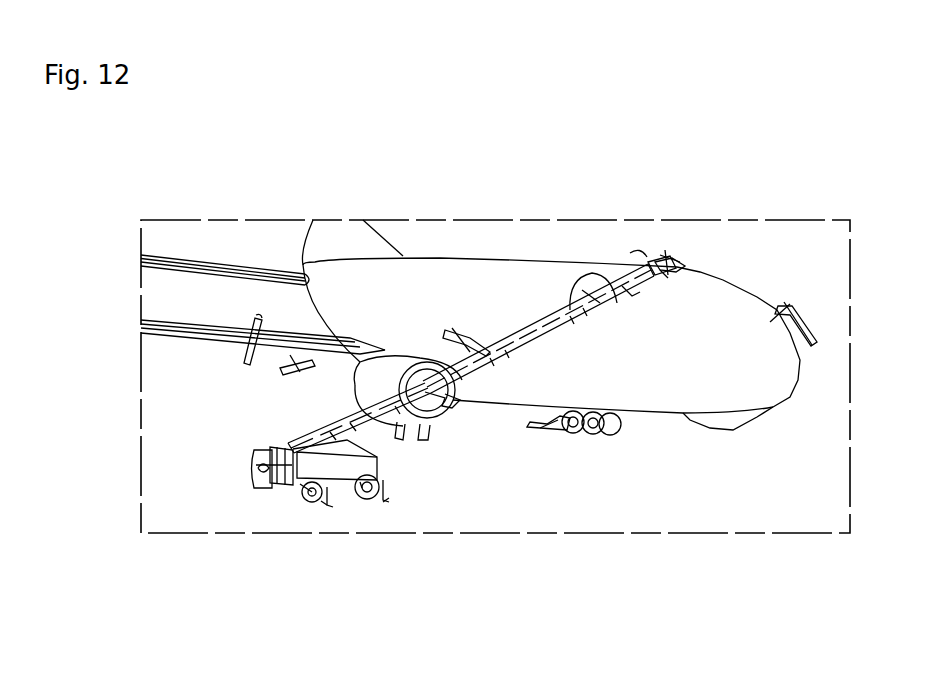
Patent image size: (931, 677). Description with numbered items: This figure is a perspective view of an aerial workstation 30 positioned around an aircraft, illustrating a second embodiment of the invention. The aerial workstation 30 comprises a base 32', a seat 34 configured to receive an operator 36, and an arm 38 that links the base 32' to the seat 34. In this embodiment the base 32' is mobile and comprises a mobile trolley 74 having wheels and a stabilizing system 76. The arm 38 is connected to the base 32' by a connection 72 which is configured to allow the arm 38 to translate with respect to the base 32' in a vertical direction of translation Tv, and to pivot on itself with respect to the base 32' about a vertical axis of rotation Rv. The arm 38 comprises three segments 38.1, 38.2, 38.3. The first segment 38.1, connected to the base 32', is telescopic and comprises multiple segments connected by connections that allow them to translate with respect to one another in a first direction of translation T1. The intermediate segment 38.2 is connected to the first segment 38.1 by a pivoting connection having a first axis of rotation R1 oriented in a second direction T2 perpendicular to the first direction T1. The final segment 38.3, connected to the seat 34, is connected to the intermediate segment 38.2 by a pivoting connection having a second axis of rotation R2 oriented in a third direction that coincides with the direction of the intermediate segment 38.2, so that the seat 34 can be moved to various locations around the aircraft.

The aerial workstation 30 is at (270, 423).
The base 32' is at (333, 539).
The seat 34 is at (660, 262).
The operator 36 is at (680, 265).
The arm 38 is at (362, 402).
The first segment 38.1 is at (403, 405).
The intermediate segment 38.2 is at (613, 282).
The final segment 38.3 is at (652, 275).
The connection 72 is at (262, 450).
The mobile trolley 74 is at (275, 484).
The stabilizing system 76 is at (262, 470).
The first direction of translation T1 is at (403, 405).
The second direction T2 is at (613, 303).
The first axis of rotation R1 is at (570, 308).
The second axis of rotation R2 is at (628, 274).
The vertical axis of rotation Rv is at (256, 453).
The vertical direction of translation Tv is at (288, 490).